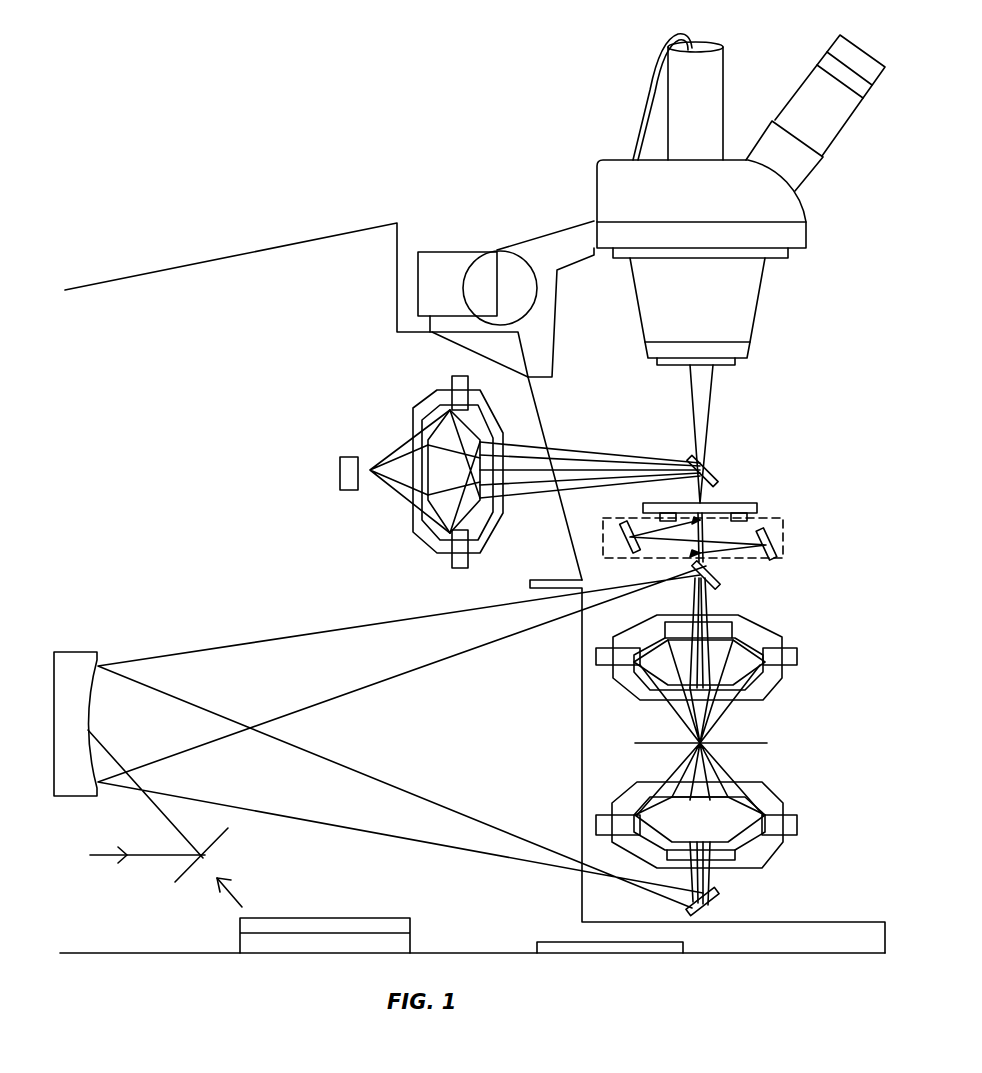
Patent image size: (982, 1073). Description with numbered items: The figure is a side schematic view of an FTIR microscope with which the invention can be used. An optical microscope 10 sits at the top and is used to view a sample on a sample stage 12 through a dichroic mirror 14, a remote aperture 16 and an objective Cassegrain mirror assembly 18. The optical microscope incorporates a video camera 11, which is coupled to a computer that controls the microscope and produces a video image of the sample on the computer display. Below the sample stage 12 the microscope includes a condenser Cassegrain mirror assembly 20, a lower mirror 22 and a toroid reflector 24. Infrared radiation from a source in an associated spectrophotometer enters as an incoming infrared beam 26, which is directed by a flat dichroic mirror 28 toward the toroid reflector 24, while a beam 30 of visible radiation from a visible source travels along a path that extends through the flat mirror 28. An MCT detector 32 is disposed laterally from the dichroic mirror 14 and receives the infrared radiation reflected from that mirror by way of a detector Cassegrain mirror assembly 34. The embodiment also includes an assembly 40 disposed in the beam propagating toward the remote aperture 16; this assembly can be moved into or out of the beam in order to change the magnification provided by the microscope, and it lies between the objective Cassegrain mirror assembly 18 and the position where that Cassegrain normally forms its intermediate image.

The optical microscope 10 is at (768, 318).
The video camera 11 is at (724, 102).
The sample stage 12 is at (750, 740).
The dichroic mirror 14 is at (712, 479).
The remote aperture 16 is at (727, 503).
The objective Cassegrain mirror assembly 18 is at (770, 628).
The condenser Cassegrain mirror assembly 20 is at (768, 852).
The lower mirror 22 is at (720, 888).
The toroid reflector 24 is at (98, 652).
The incoming infrared beam 26 is at (130, 860).
The flat dichroic mirror 28 is at (228, 838).
The beam of visible radiation 30 is at (232, 888).
The MCT detector 32 is at (349, 455).
The detector Cassegrain mirror assembly 34 is at (420, 540).
The assembly 40 is at (760, 562).